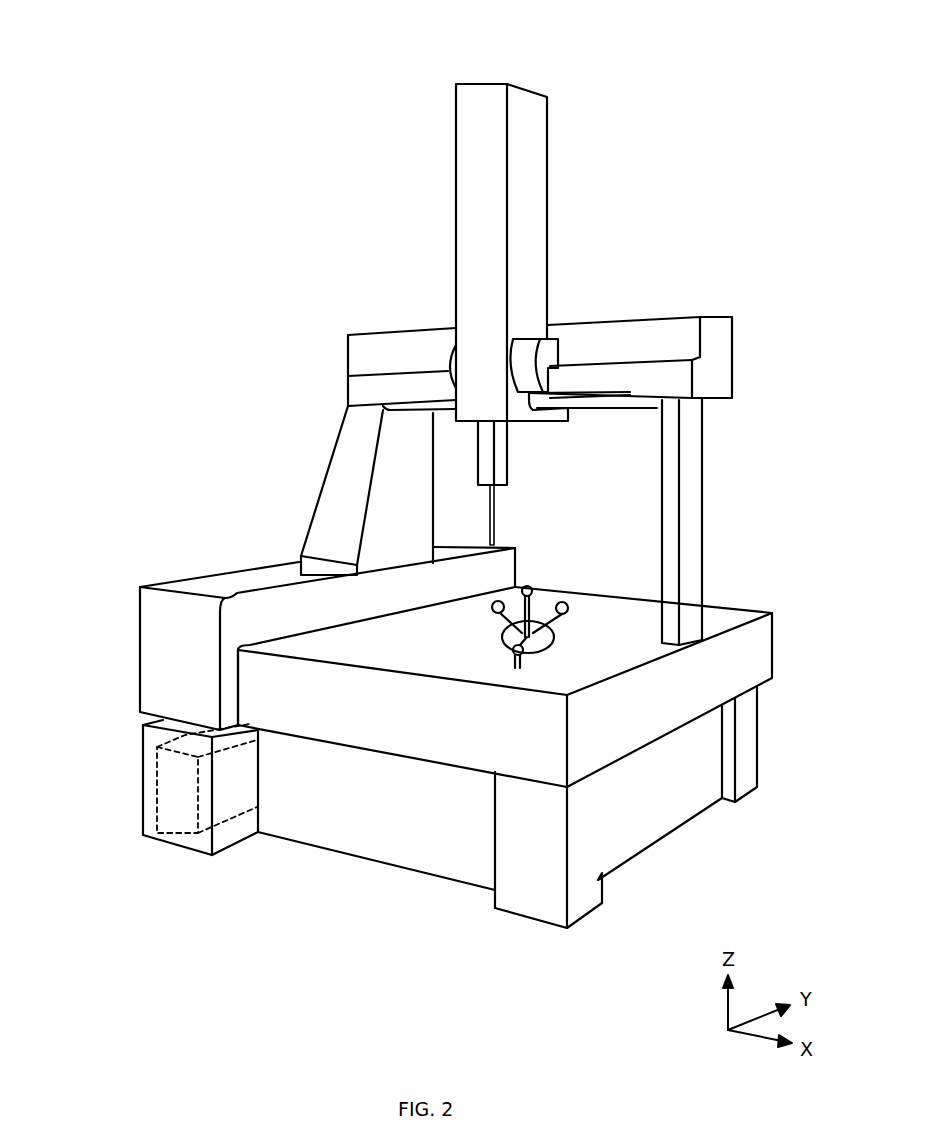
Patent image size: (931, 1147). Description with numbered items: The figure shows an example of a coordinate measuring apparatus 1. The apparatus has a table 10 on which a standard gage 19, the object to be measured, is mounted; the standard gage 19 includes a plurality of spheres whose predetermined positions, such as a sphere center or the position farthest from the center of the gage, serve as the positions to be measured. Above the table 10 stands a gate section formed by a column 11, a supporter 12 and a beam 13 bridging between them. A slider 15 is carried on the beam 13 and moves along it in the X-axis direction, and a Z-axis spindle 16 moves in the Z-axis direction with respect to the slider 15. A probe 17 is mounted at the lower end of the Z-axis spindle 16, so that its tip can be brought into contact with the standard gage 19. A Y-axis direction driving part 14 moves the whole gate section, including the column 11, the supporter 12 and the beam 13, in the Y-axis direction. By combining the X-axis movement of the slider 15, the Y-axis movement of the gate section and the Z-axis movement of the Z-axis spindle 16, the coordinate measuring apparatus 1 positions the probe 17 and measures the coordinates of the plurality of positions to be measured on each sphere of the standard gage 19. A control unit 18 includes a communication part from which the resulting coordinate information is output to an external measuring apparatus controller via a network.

The coordinate measuring apparatus 1 is at (497, 62).
The table 10 is at (393, 720).
The column 11 is at (345, 461).
The supporter 12 is at (697, 462).
The beam 13 is at (365, 346).
The Y-axis direction driving part 14 is at (165, 635).
The slider 15 is at (525, 178).
The Z-axis spindle 16 is at (498, 472).
The probe 17 is at (494, 518).
The control unit 18 is at (157, 788).
The standard gage 19 is at (567, 627).